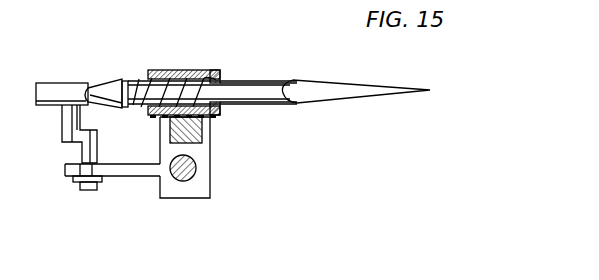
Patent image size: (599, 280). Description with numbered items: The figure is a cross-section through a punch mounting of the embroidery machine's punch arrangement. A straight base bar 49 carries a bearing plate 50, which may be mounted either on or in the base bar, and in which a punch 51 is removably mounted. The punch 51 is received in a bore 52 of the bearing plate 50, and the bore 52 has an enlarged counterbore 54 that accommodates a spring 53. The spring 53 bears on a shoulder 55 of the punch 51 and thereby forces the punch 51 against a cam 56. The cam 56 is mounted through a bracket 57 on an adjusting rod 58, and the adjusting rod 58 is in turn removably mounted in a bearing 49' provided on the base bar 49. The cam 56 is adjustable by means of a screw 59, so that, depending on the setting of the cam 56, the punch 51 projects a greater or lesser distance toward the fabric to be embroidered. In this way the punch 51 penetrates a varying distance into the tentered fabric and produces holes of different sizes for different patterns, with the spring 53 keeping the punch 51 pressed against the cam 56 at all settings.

The base bar 49 is at (227, 131).
The bearing 49' is at (224, 166).
The bearing plate 50 is at (218, 78).
The punch 51 is at (270, 86).
The bore 52 is at (236, 81).
The spring 53 is at (149, 82).
The counterbore 54 is at (180, 78).
The shoulder 55 is at (108, 87).
The cam 56 is at (53, 83).
The bracket 57 is at (64, 133).
The adjusting rod 58 is at (194, 163).
The screw 59 is at (81, 188).